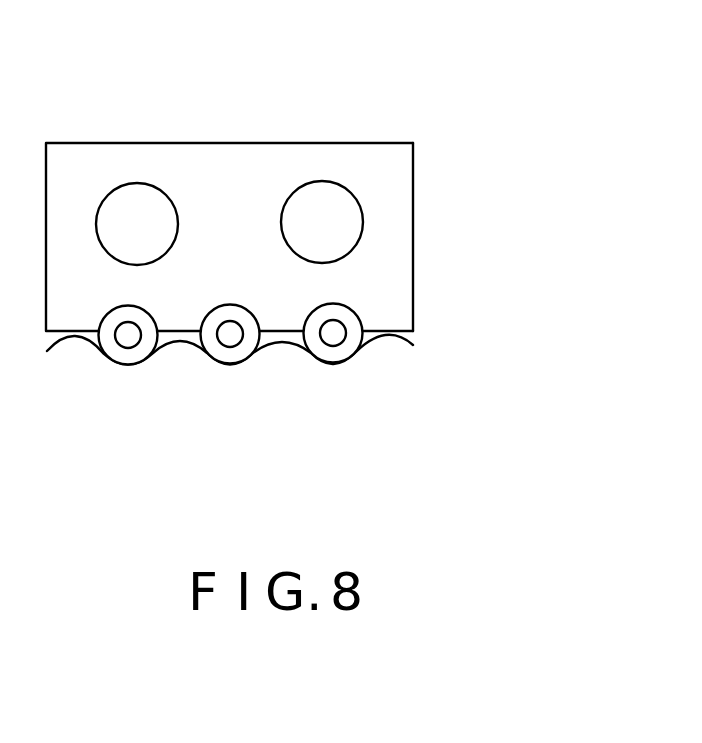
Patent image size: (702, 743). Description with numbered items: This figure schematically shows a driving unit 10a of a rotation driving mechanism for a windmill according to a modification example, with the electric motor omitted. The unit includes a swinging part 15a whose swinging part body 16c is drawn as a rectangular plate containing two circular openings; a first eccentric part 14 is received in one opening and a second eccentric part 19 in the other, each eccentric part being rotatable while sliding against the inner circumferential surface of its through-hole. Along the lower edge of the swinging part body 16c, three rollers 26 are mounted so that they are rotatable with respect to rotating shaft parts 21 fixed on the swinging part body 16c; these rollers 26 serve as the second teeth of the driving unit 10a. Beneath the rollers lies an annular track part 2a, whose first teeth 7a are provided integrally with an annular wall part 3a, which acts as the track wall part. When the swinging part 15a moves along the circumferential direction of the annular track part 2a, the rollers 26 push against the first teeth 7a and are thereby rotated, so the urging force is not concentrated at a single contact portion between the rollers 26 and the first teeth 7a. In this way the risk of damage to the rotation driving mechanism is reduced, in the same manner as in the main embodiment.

The driving unit 10a is at (360, 88).
The swinging part 15a is at (415, 177).
The swinging part body 16c is at (398, 265).
The second eccentric part 19 is at (137, 200).
The first eccentric part 14 is at (313, 218).
The first teeth 7a is at (399, 345).
The annular track part 2a is at (477, 373).
The annular wall part 3a is at (415, 392).
The roller 26 is at (355, 448).
The rotating shaft part 21 is at (315, 400).